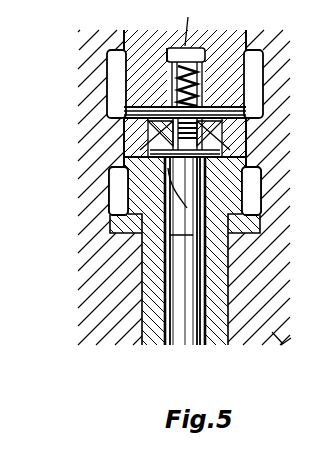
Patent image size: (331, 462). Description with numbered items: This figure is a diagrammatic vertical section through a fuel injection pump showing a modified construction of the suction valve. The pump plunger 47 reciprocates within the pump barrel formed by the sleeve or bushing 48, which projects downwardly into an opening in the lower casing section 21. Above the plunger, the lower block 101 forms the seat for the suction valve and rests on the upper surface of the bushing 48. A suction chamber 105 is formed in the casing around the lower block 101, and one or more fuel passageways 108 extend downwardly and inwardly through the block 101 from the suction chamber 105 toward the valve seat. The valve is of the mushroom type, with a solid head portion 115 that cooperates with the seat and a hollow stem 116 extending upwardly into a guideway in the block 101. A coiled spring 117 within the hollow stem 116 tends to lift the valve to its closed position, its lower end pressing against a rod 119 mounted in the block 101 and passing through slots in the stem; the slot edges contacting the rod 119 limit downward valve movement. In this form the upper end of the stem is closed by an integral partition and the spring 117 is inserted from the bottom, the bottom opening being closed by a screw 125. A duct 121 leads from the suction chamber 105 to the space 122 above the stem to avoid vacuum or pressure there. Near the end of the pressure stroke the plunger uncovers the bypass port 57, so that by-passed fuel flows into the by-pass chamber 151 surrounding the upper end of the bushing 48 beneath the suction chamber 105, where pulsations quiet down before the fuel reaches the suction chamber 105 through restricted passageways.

The lower casing section 21 is at (327, 343).
The pump plunger 47 is at (191, 333).
The sleeve or bushing 48 is at (149, 330).
The overflow or bypass port 57 is at (142, 218).
The lower block 101 is at (170, 48).
The suction chamber 105 is at (330, 80).
The fuel passageway 108 is at (240, 129).
The head portion 115 is at (330, 162).
The hollow stem 116 is at (330, 60).
The coiled spring 117 is at (172, 72).
The rod 119 is at (150, 110).
The duct 121 is at (188, 17).
The space 122 is at (218, 46).
The screw 125 is at (175, 142).
The by-pass chamber 151 is at (330, 200).